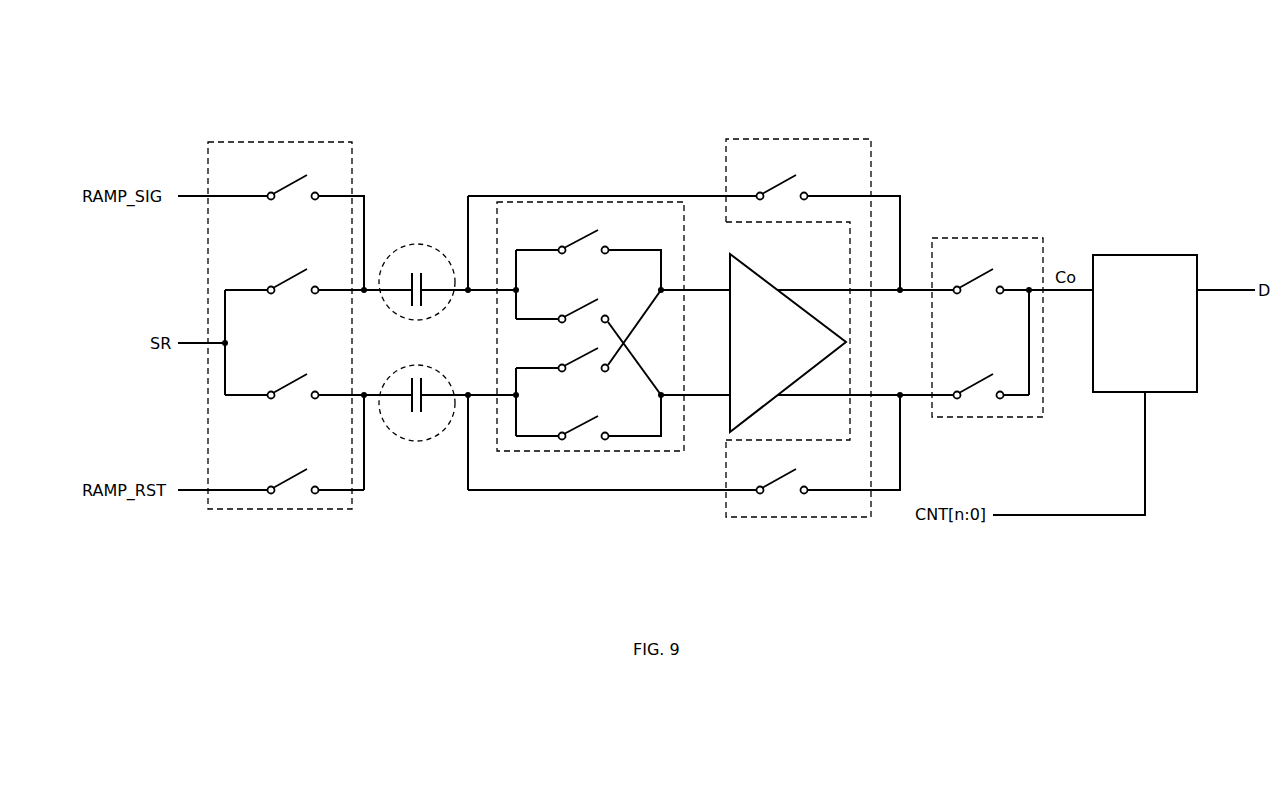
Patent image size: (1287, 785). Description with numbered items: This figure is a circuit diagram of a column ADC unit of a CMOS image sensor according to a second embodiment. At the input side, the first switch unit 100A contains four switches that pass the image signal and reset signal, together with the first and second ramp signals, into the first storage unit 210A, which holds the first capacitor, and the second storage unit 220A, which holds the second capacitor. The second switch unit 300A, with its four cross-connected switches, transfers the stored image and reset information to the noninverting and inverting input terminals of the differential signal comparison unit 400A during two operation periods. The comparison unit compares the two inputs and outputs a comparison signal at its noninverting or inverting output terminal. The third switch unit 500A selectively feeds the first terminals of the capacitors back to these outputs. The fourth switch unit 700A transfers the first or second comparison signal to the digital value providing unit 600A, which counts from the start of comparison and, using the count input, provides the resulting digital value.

The first switch unit 100A is at (290, 509).
The first storage unit 210A is at (415, 244).
The second storage unit 220A is at (415, 441).
The second switch unit 300A is at (590, 452).
The differential signal comparison unit 400A is at (768, 283).
The third switch unit 500A is at (871, 165).
The digital value providing unit 600A is at (1140, 255).
The fourth switch unit 700A is at (985, 238).